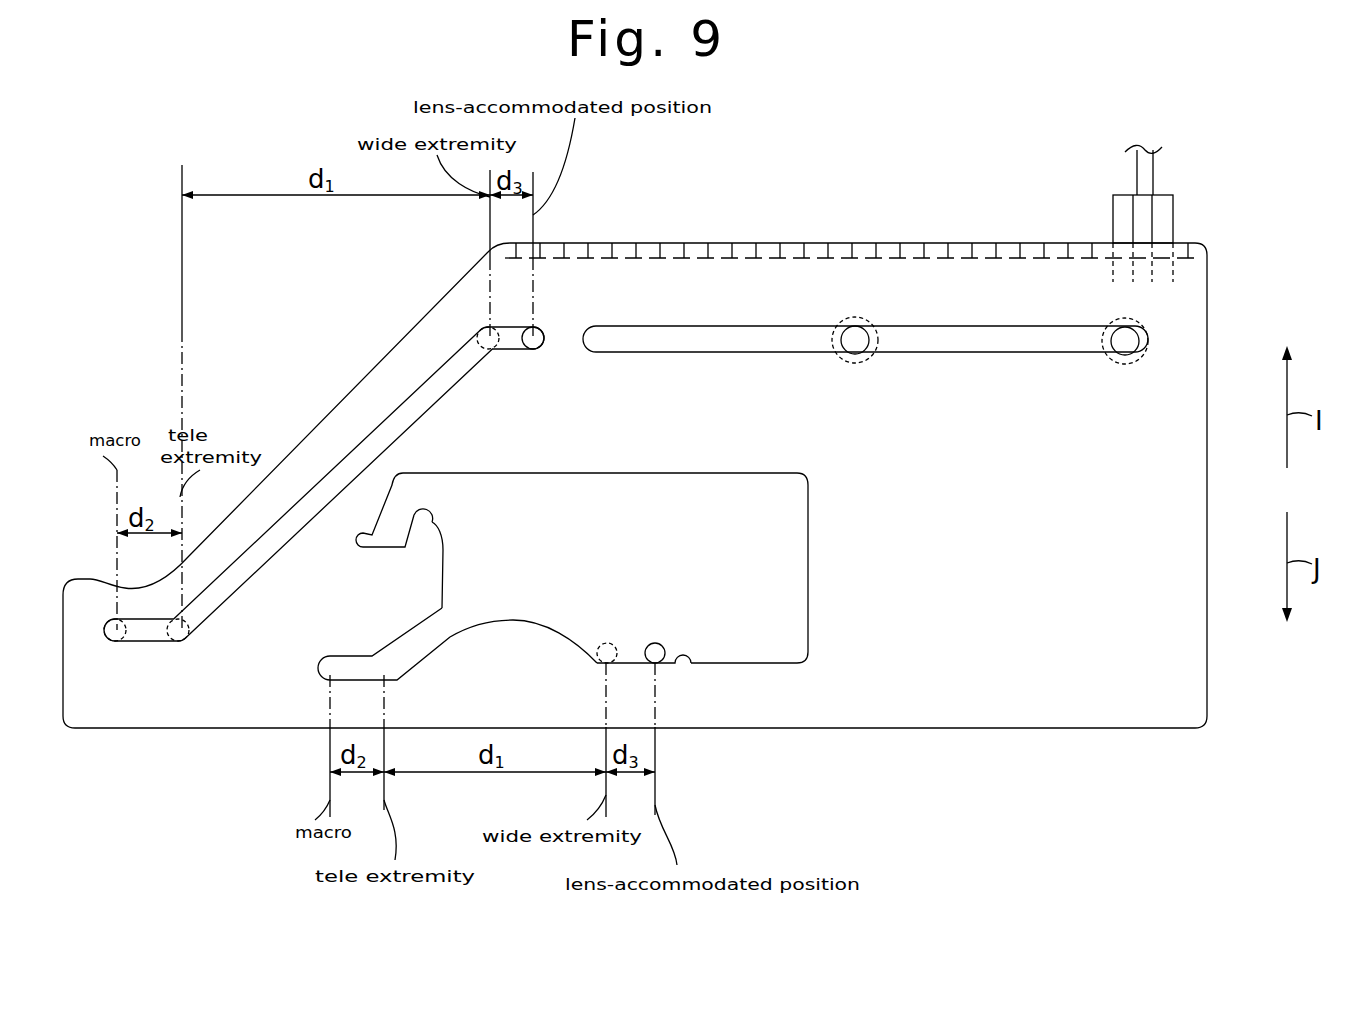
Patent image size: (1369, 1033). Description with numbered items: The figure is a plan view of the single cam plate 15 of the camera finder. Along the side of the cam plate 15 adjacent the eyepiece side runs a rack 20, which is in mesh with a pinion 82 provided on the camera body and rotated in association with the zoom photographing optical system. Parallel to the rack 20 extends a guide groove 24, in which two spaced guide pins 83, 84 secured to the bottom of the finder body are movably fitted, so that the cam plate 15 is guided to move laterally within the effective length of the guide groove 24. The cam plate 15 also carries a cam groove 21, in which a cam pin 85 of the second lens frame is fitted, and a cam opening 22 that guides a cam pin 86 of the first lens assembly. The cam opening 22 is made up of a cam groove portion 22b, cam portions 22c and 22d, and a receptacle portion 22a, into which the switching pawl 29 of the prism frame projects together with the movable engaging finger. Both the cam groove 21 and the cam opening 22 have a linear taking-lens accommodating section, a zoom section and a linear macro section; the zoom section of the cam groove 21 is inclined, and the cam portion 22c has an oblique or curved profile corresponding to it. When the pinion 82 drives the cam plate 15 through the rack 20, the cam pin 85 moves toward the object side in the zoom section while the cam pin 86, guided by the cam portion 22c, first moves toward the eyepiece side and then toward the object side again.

The cam plate 15 is at (1060, 194).
The rack 20 is at (805, 245).
The cam groove 21 is at (398, 424).
The cam opening 22 is at (546, 588).
The receptacle portion 22a is at (379, 479).
The cam groove portion 22b is at (423, 648).
The cam portion 22c is at (530, 640).
The cam portion 22d is at (692, 666).
The guide groove 24 is at (957, 332).
The switching pawl 29 is at (425, 522).
The pinion 82 is at (1170, 228).
The guide pin 83 is at (1140, 342).
The guide pin 84 is at (852, 335).
The cam pin 85 is at (545, 350).
The cam pin 86 is at (655, 643).